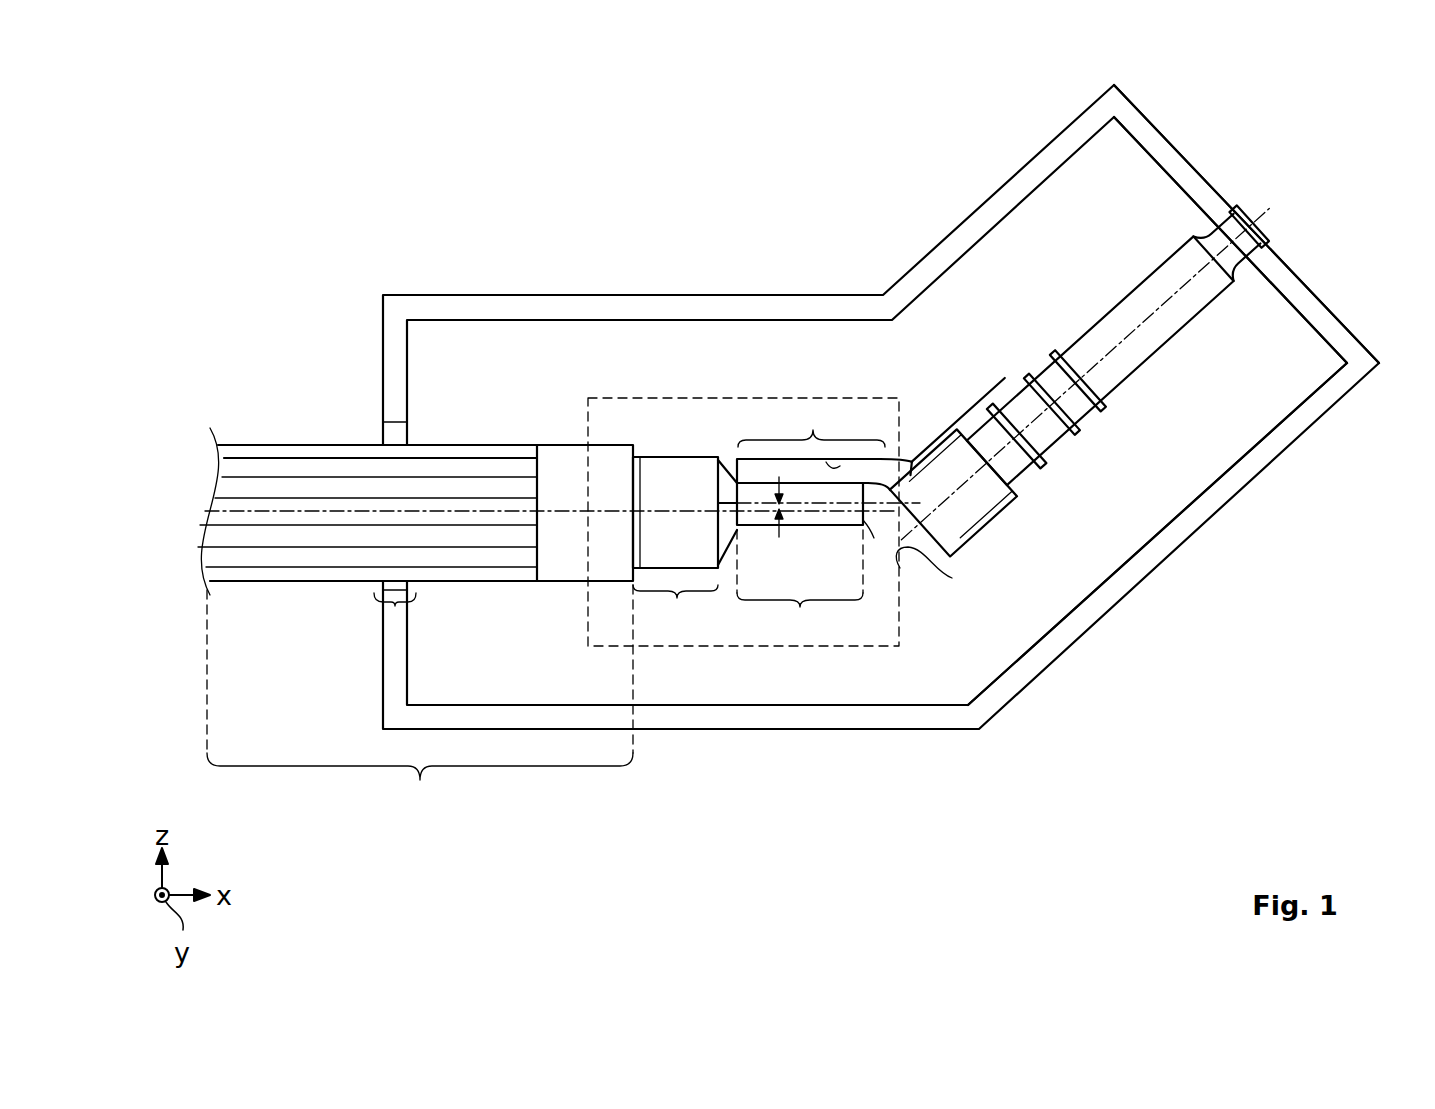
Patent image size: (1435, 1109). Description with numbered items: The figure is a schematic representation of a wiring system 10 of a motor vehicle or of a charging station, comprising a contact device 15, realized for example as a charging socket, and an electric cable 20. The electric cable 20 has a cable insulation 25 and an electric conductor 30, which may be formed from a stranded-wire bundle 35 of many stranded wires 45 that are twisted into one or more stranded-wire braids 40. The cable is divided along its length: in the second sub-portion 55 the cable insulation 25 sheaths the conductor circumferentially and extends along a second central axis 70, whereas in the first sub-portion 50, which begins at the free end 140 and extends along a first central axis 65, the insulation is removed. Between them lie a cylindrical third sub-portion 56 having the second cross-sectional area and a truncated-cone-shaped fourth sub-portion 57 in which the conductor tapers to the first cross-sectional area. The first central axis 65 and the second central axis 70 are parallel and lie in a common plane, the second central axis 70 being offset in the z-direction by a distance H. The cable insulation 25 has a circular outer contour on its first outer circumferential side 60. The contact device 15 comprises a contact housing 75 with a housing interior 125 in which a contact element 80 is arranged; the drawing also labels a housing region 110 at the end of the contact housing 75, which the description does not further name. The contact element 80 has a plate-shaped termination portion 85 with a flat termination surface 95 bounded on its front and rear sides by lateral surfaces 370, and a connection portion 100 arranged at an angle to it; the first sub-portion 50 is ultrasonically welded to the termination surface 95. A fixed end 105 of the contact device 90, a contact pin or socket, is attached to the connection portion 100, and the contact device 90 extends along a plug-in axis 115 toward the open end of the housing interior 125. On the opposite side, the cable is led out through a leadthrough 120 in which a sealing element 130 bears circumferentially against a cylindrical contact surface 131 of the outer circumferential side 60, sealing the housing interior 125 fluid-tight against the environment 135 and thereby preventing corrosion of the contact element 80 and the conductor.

The wiring system 10 is at (1098, 770).
The contact device 15 is at (864, 792).
The electric cable 20 is at (268, 624).
The cable insulation 25 is at (363, 450).
The electric conductor 30 is at (376, 440).
The stranded-wire bundle 35 is at (448, 485).
The stranded-wire braid 40 is at (373, 579).
The stranded wires 45 is at (520, 538).
The first sub-portion 50 is at (800, 559).
The second sub-portion 55 is at (420, 699).
The third sub-portion 56 is at (675, 545).
The fourth sub-portion 57 is at (727, 583).
The first outer circumferential side 60 is at (262, 444).
The first central axis 65 is at (893, 467).
The second central axis 70 is at (565, 510).
The contact housing 75 is at (1243, 485).
The contact element 80 is at (960, 553).
The termination portion 85 is at (824, 444).
The contact device 90 is at (1150, 290).
The termination surface 95 is at (840, 484).
The connection portion 100 is at (900, 570).
The fixed end 105 is at (993, 470).
The housing end wall 110 is at (1242, 298).
The plug-in axis 115 is at (1255, 212).
The leadthrough 120 is at (448, 639).
The housing interior 125 is at (1168, 500).
The sealing element 130 is at (404, 590).
The contact surface 131 is at (390, 618).
The environment 135 is at (524, 878).
The free end 140 is at (868, 496).
The lateral surface 370 is at (830, 466).
The distance H is at (779, 534).